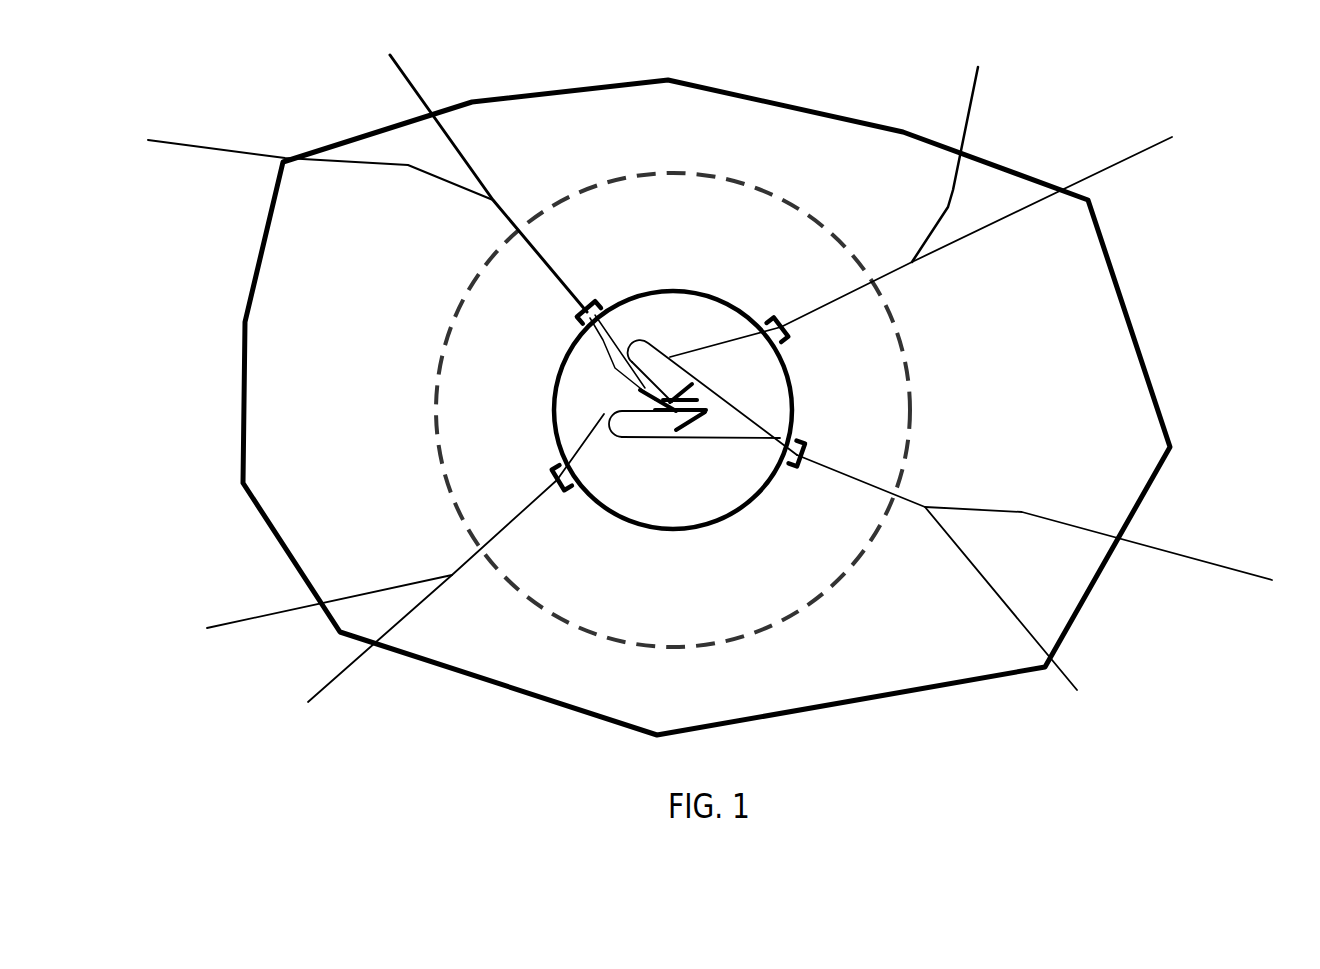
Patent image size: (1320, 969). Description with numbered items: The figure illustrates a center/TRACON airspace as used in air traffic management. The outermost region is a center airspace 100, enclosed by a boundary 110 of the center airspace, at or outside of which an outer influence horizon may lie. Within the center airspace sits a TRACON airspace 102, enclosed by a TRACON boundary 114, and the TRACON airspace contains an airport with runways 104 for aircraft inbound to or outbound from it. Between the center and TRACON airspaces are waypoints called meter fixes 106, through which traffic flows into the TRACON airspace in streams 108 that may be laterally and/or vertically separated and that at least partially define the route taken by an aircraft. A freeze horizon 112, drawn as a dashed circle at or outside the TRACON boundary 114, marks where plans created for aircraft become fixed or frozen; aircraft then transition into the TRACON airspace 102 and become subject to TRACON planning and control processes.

The center airspace 100 is at (706, 380).
The TRACON airspace 102 is at (675, 424).
The runways 104 is at (628, 397).
The meter fixes 106 is at (546, 449).
The streams 108 is at (398, 198).
The boundary of the center airspace 110 is at (586, 86).
The freeze horizon 112 is at (582, 176).
The TRACON boundary 114 is at (675, 532).